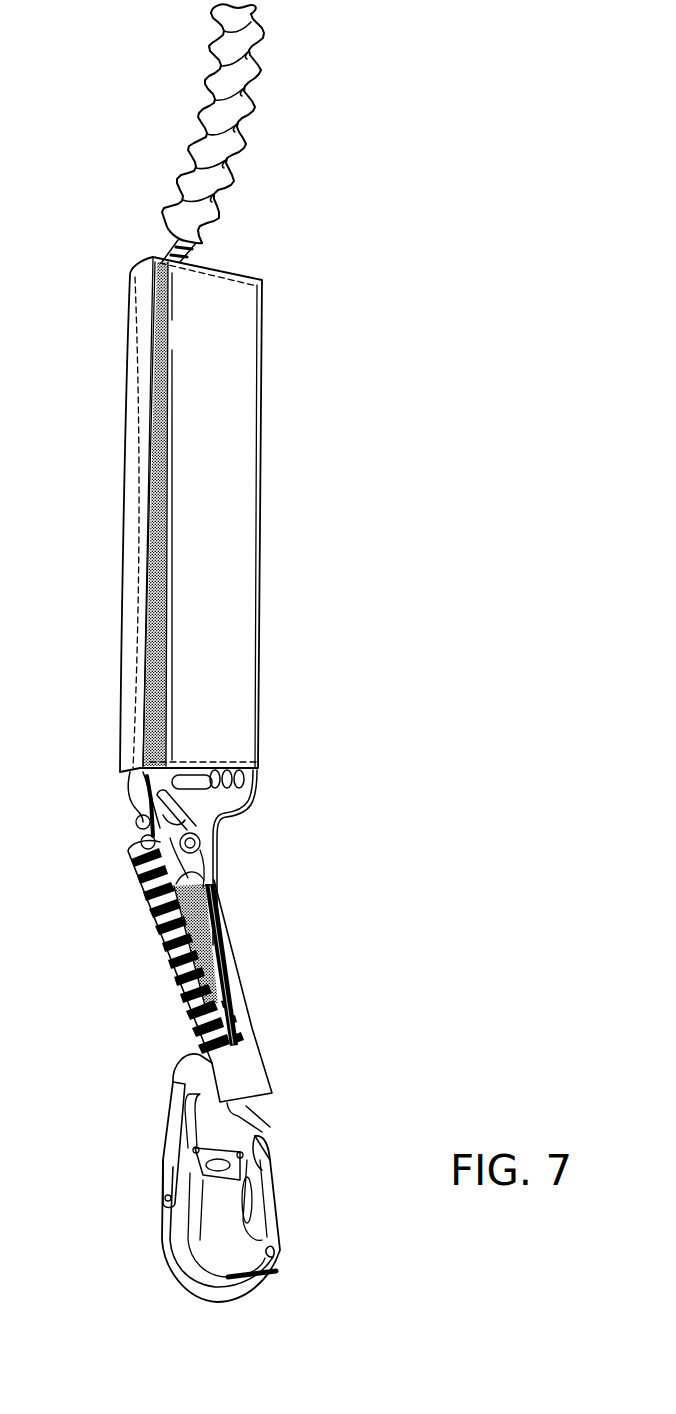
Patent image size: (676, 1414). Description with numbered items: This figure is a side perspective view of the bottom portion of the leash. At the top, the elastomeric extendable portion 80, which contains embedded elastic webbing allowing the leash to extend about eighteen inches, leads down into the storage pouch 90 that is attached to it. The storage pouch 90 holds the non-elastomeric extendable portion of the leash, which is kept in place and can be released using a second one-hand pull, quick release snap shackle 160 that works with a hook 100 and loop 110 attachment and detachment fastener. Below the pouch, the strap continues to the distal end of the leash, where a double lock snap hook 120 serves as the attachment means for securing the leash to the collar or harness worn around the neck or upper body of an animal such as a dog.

The elastomeric extendable portion 80 is at (242, 154).
The storage pouch 90 is at (236, 480).
The quick release snap shackle 160 is at (200, 840).
The hook 100 is at (222, 919).
The loop 110 is at (168, 957).
The double lock snap hook 120 is at (149, 1234).